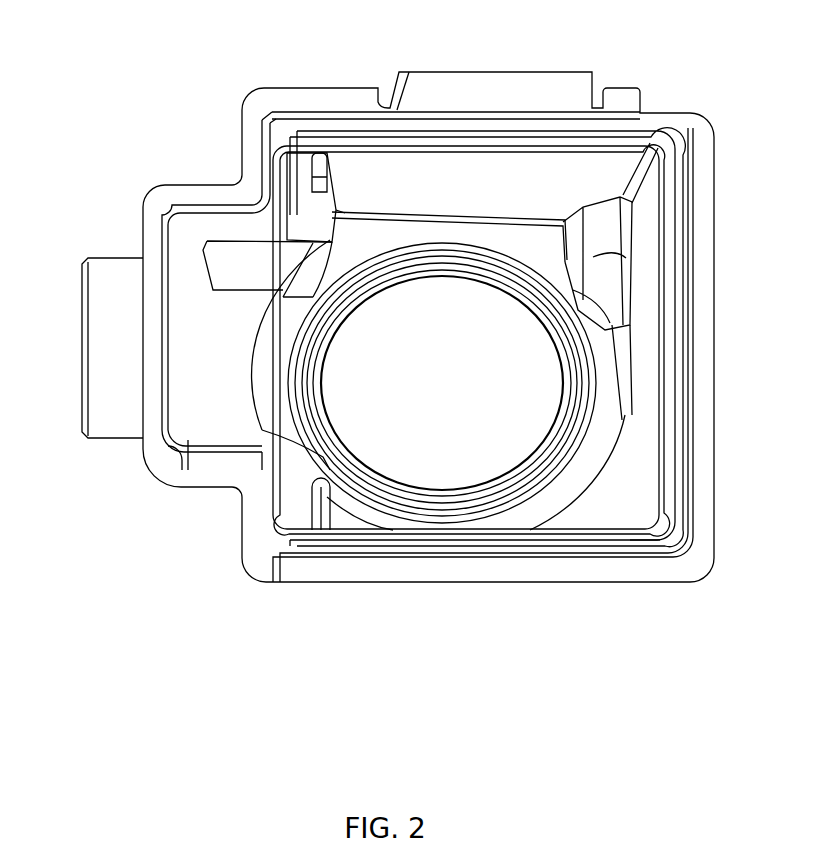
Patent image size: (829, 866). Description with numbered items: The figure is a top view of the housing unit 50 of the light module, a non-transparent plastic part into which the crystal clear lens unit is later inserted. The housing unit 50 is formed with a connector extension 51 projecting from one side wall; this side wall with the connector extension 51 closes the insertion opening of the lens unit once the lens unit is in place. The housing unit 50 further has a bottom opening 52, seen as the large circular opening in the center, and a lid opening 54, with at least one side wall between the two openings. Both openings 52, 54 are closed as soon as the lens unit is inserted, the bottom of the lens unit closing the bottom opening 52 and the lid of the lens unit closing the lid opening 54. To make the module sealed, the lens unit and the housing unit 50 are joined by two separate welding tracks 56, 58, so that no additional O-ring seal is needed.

The housing unit 50 is at (683, 91).
The connector extension 51 is at (107, 283).
The bottom opening 52 is at (429, 386).
The lid opening 54 is at (555, 507).
The welding track 56 is at (446, 490).
The welding track 58 is at (635, 542).